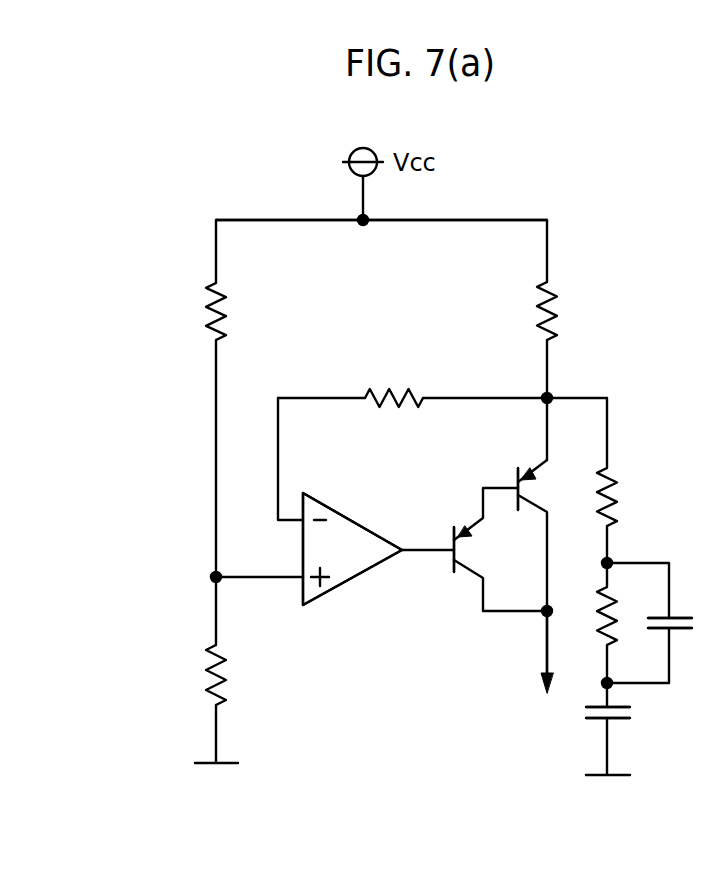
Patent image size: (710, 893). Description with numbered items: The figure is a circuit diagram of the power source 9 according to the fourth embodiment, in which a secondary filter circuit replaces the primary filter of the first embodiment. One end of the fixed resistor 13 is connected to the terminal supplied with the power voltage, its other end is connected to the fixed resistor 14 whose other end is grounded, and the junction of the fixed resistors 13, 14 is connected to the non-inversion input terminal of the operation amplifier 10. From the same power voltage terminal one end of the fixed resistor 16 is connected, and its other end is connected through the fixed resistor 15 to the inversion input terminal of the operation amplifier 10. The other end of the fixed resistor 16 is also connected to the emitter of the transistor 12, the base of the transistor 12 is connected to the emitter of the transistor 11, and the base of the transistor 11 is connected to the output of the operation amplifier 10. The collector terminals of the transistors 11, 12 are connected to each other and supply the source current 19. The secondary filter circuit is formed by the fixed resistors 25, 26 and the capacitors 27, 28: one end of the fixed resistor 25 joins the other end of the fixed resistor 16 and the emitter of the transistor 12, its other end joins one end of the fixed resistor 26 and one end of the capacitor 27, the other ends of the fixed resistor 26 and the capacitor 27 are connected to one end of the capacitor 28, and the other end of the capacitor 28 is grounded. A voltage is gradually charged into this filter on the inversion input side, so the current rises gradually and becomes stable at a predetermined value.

The power source 9 is at (532, 191).
The operation amplifier 10 is at (312, 603).
The transistor 11 is at (451, 526).
The transistor 12 is at (518, 472).
The fixed resistor 13 is at (208, 316).
The fixed resistor 14 is at (208, 678).
The fixed resistor 15 is at (367, 392).
The fixed resistor 16 is at (538, 318).
The source current 19 is at (566, 656).
The fixed resistor 25 is at (602, 472).
The fixed resistor 26 is at (601, 598).
The capacitor 27 is at (661, 630).
The capacitor 28 is at (615, 721).